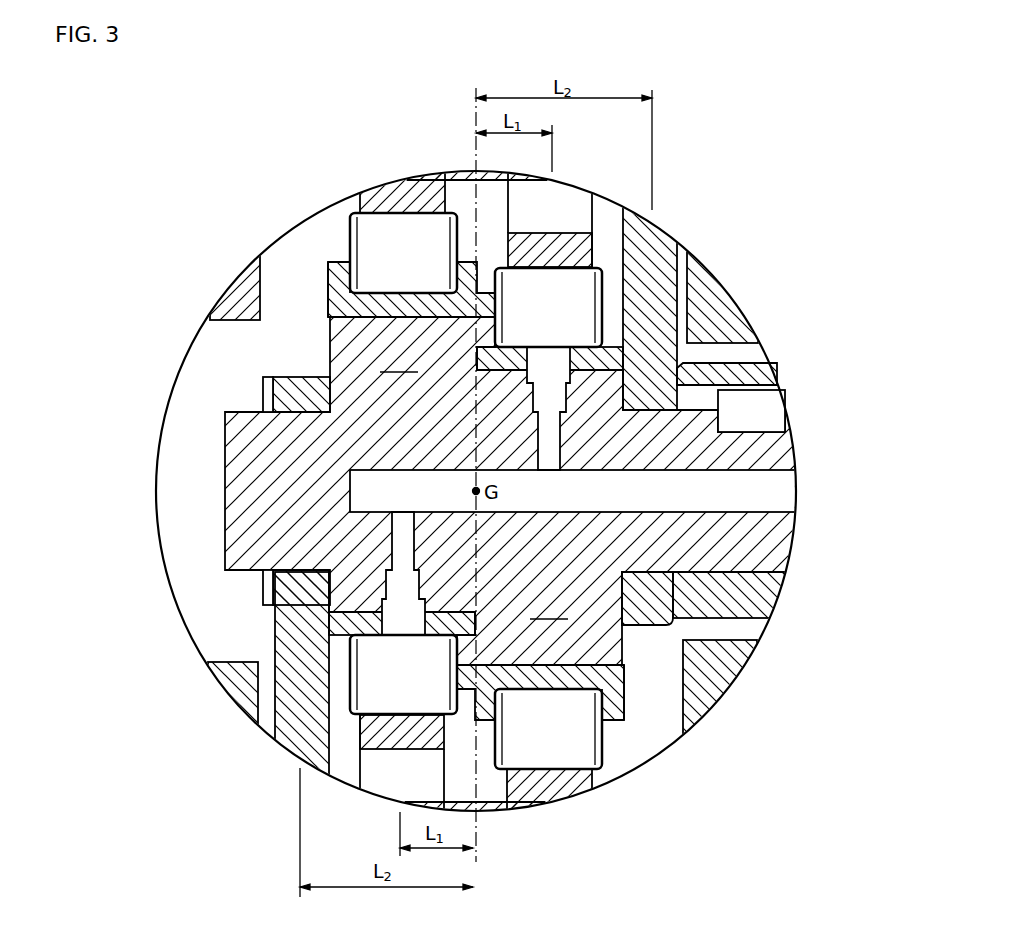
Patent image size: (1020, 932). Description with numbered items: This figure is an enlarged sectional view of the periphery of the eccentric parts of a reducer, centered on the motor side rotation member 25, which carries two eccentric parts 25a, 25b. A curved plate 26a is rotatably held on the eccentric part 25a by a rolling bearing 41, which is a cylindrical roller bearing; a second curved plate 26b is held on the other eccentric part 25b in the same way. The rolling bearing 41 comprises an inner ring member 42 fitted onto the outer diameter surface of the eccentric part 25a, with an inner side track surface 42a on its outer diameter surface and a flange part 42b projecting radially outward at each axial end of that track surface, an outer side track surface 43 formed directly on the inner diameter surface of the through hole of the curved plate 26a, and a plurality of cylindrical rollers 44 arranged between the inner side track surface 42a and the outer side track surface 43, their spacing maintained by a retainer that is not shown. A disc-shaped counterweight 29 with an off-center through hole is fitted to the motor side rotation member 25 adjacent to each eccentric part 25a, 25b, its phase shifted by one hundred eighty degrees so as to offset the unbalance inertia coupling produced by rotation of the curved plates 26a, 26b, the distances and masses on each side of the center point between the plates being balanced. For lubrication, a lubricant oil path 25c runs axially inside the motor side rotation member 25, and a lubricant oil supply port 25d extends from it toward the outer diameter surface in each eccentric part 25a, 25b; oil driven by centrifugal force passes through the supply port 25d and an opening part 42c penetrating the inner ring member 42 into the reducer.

The motor side rotation member 25 is at (280, 493).
The eccentric part 25a is at (549, 607).
The eccentric part 25b is at (399, 360).
The lubricant oil path 25c is at (762, 496).
The lubricant oil supply port 25d is at (548, 455).
The curved plate 26a is at (553, 785).
The curved plate 26b is at (405, 195).
The counterweight 29 is at (657, 248).
The rolling bearing 41 is at (330, 238).
The inner ring member 42 is at (325, 290).
The inner side track surface 42a is at (352, 272).
The flange part 42b is at (328, 290).
The opening part 42c is at (548, 363).
The outer side track surface 43 is at (380, 222).
The cylindrical rollers 44 is at (425, 232).